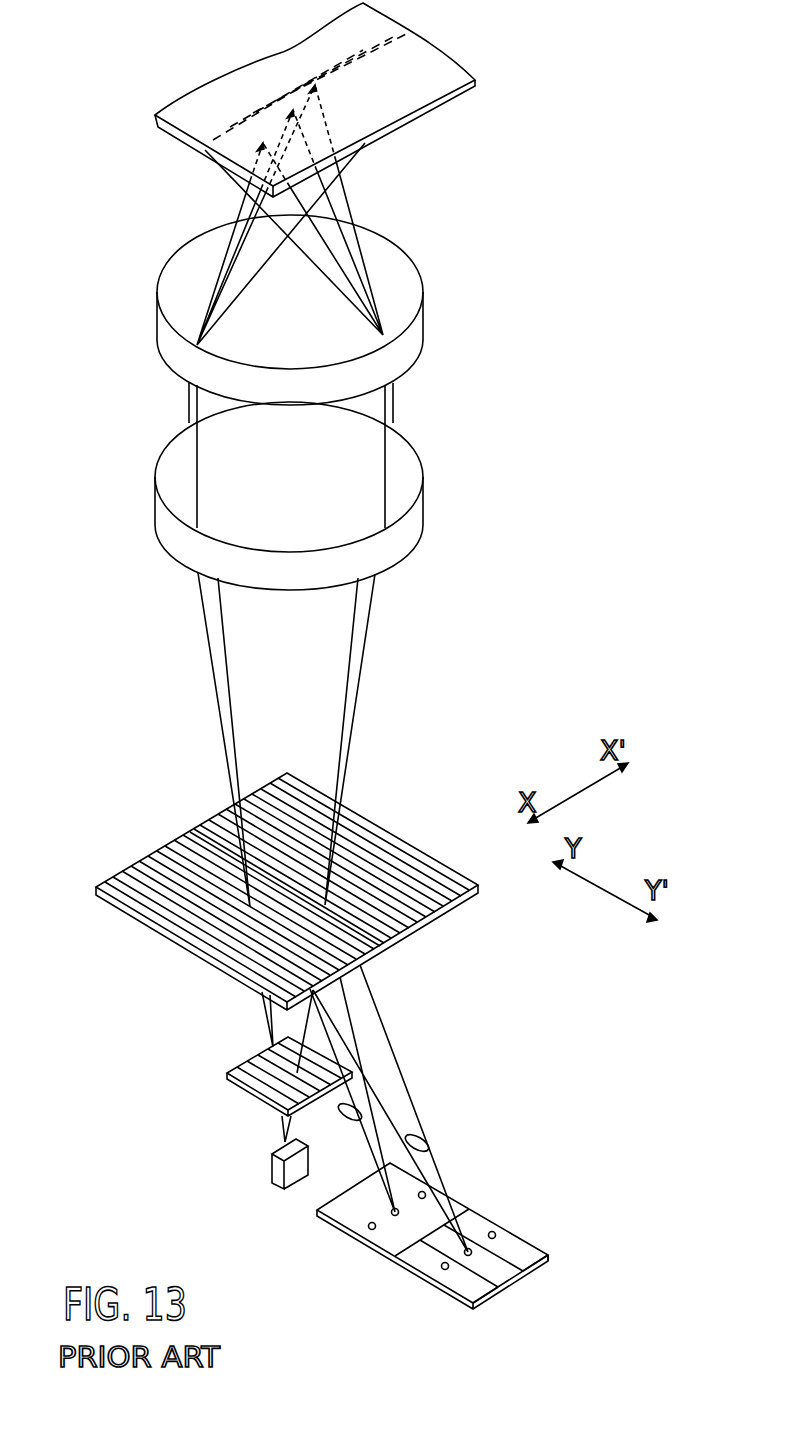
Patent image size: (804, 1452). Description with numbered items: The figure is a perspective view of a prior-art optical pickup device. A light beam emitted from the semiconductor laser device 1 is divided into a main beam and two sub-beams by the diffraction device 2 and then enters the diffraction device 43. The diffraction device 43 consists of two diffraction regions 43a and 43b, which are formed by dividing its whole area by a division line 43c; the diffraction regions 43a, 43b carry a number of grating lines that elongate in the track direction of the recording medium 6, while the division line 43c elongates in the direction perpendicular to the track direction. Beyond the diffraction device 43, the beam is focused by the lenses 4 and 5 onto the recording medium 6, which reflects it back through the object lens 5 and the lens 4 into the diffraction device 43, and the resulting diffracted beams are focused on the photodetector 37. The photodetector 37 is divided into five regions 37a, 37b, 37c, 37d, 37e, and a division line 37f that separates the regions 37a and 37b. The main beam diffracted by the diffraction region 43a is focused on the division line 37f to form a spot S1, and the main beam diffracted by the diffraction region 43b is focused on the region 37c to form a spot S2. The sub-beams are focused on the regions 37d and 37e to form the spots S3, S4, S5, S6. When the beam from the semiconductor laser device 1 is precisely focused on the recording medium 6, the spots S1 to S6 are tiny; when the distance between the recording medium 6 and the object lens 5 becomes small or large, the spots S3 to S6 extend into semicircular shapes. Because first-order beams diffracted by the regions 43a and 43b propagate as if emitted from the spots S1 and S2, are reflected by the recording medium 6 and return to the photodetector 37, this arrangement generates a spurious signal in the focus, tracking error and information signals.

The semiconductor laser device 1 is at (273, 1173).
The diffraction device 2 is at (227, 1076).
The lens 4 is at (155, 517).
The object lens 5 is at (157, 328).
The recording medium 6 is at (156, 127).
The diffraction device 43 is at (274, 876).
The diffraction region 43a is at (227, 803).
The diffraction region 43b is at (130, 873).
The division line 43c is at (207, 837).
The photodetector 37 is at (423, 1254).
The region 37a is at (540, 1278).
The region 37b is at (505, 1287).
The region 37c is at (363, 1193).
The region 37d is at (481, 1296).
The region 37e is at (549, 1255).
The division line 37f is at (520, 1238).
The spot S1 is at (466, 1256).
The spot S2 is at (396, 1217).
The spot S3 is at (442, 1270).
The spot S4 is at (368, 1227).
The spot S5 is at (494, 1232).
The spot S6 is at (424, 1192).